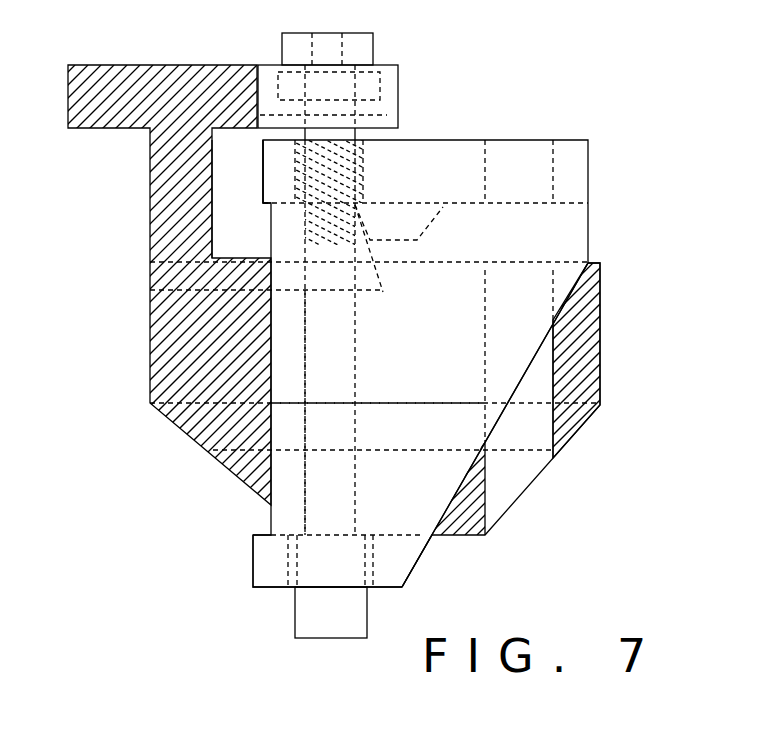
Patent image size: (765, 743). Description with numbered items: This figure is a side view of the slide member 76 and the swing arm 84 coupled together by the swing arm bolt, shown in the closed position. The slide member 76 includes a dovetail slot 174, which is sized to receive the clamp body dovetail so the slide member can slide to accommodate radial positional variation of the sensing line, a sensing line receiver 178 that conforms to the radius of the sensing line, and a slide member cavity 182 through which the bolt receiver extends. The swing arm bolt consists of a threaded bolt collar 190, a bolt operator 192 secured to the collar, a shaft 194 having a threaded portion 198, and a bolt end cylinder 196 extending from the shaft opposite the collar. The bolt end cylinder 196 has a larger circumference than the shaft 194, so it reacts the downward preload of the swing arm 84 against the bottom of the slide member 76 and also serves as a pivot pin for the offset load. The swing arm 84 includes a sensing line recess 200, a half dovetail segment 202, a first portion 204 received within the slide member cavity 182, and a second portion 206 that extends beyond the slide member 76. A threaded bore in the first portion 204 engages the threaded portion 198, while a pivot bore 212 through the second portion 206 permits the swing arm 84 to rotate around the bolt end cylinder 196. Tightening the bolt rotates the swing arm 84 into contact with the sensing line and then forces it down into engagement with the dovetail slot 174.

The slide member 76 is at (183, 347).
The swing arm 84 is at (465, 334).
The dovetail slot 174 is at (140, 327).
The sensing line receiver 178 is at (533, 395).
The slide member cavity 182 is at (232, 197).
The threaded bolt collar 190 is at (357, 53).
The bolt operator 192 is at (325, 28).
The shaft 194 is at (330, 405).
The bolt end cylinder 196 is at (323, 616).
The threaded portion 198 is at (332, 178).
The sensing line recess 200 is at (524, 132).
The half dovetail segment 202 is at (413, 220).
The first portion 204 is at (288, 170).
The second portion 206 is at (366, 206).
The pivot bore 212 is at (373, 560).